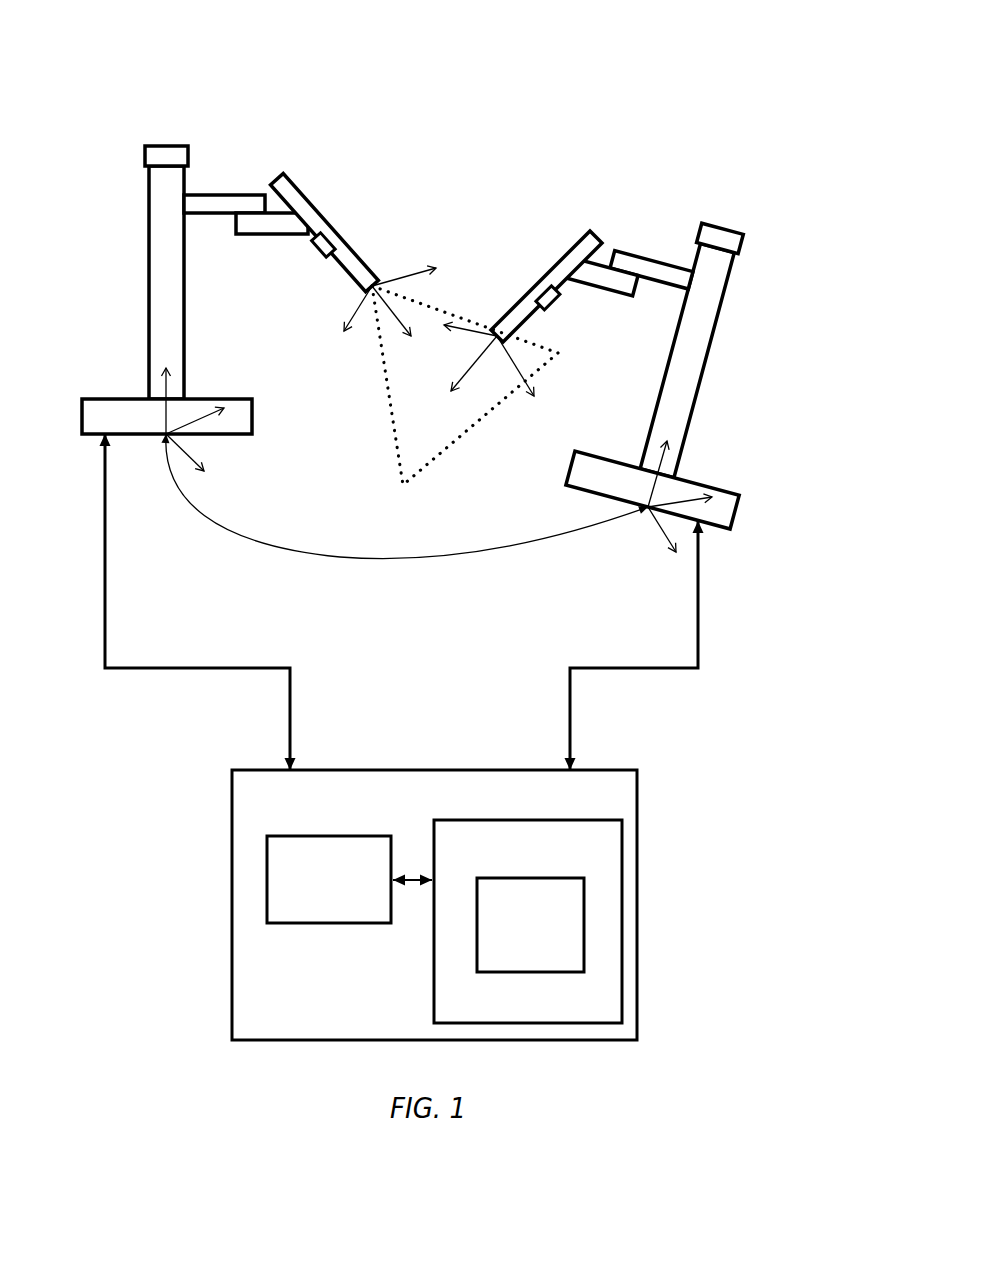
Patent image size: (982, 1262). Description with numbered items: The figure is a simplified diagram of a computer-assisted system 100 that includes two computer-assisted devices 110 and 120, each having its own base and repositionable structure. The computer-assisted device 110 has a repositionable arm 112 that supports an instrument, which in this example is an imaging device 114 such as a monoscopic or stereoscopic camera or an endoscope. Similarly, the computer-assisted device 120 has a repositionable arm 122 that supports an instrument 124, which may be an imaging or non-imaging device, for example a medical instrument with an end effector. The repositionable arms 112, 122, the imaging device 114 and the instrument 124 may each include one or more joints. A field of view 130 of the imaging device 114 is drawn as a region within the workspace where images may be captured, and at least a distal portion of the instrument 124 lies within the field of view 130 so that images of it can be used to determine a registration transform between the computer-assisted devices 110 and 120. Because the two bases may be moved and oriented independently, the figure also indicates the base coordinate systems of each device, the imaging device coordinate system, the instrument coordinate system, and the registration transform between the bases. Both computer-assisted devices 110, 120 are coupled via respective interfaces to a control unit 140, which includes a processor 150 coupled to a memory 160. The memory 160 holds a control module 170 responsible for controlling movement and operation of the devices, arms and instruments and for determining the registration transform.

The computer-assisted system 100 is at (62, 44).
The computer-assisted device 110 is at (149, 310).
The repositionable arm 112 is at (227, 195).
The imaging device 114 is at (355, 262).
The computer-assisted device 120 is at (705, 358).
The repositionable arm 122 is at (565, 250).
The instrument 124 is at (525, 306).
The field of view 130 is at (372, 344).
The control unit 140 is at (434, 905).
The processor 150 is at (329, 879).
The memory 160 is at (528, 921).
The control module 170 is at (530, 925).